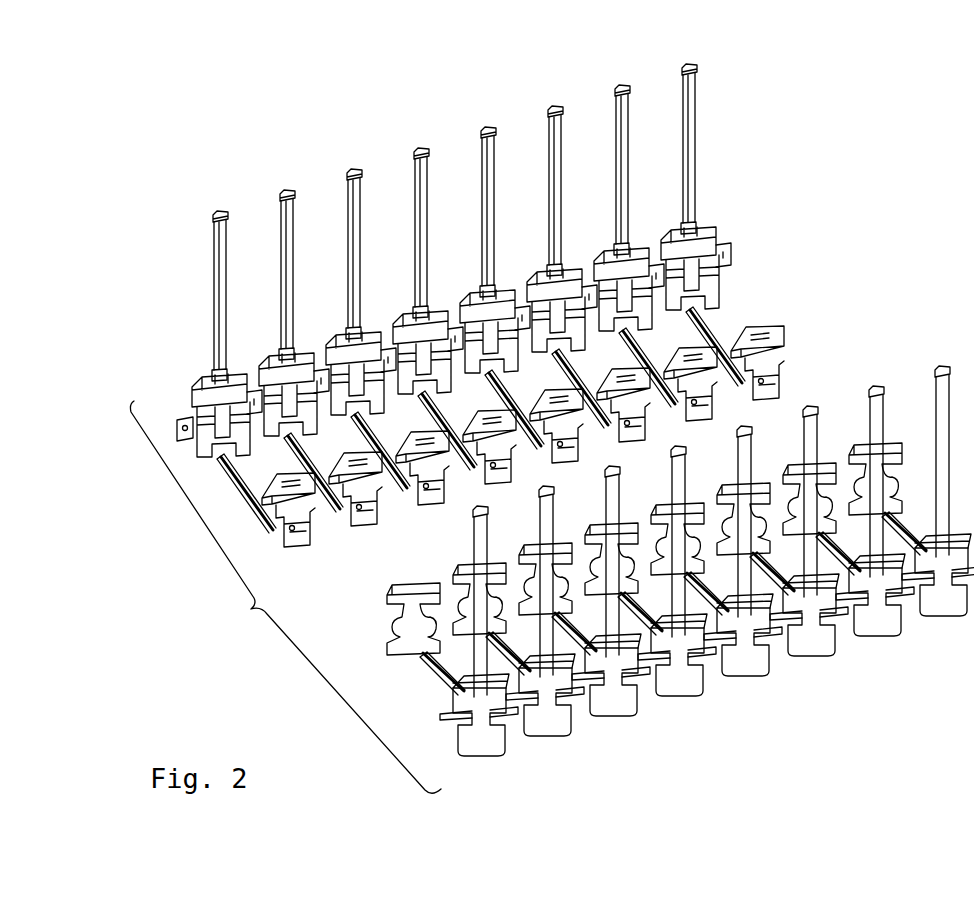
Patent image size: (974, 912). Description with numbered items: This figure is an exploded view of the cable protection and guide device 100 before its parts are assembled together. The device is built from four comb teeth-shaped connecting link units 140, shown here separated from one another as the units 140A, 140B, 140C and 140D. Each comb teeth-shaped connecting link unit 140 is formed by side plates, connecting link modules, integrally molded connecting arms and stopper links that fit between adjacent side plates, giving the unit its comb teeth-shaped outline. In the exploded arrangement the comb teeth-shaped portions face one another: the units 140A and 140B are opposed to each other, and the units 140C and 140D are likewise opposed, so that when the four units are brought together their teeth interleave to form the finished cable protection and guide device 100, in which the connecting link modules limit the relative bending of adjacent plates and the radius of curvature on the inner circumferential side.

The cable protection and guide device 100 is at (252, 625).
The comb teeth-shaped connecting link unit 140 is at (575, 431).
The comb teeth-shaped connecting link unit 140A is at (725, 692).
The comb teeth-shaped connecting link unit 140B is at (727, 696).
The comb teeth-shaped connecting link unit 140C is at (705, 41).
The comb teeth-shaped connecting link unit 140D is at (445, 122).